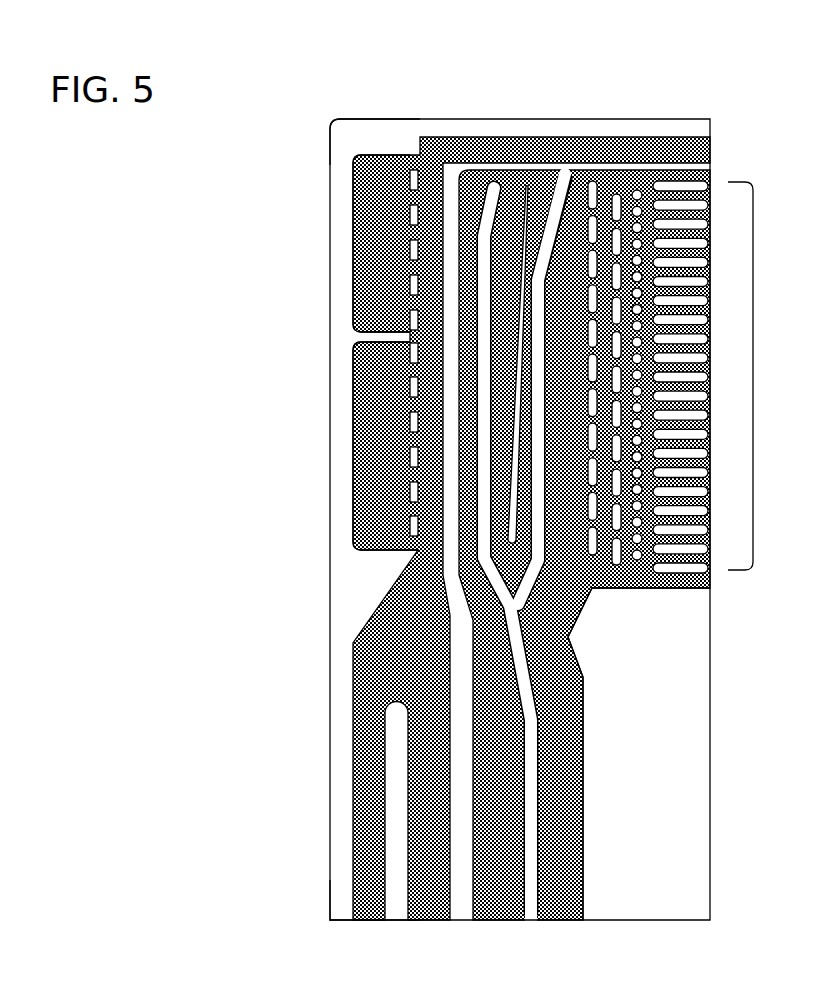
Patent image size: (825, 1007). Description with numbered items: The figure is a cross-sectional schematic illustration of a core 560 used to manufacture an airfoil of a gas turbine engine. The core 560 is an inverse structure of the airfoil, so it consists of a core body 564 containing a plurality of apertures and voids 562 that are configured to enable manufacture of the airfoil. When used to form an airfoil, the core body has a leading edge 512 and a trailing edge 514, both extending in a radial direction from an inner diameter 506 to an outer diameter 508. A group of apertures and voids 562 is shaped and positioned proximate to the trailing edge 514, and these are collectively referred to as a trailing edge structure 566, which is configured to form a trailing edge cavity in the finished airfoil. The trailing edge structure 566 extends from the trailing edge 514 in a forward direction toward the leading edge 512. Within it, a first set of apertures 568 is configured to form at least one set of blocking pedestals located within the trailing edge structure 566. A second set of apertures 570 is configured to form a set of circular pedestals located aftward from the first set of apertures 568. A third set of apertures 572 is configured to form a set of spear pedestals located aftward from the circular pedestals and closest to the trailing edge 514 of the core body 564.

The inner diameter 506 is at (286, 908).
The outer diameter 508 is at (286, 137).
The leading edge 512 is at (340, 503).
The trailing edge 514 is at (716, 645).
The core 560 is at (222, 273).
The apertures or voids 562 is at (410, 455).
The core body 564 is at (398, 627).
The trailing edge structure 566 is at (753, 377).
The first set of apertures 568 is at (593, 170).
The second set of apertures 570 is at (623, 170).
The third set of apertures 572 is at (661, 160).